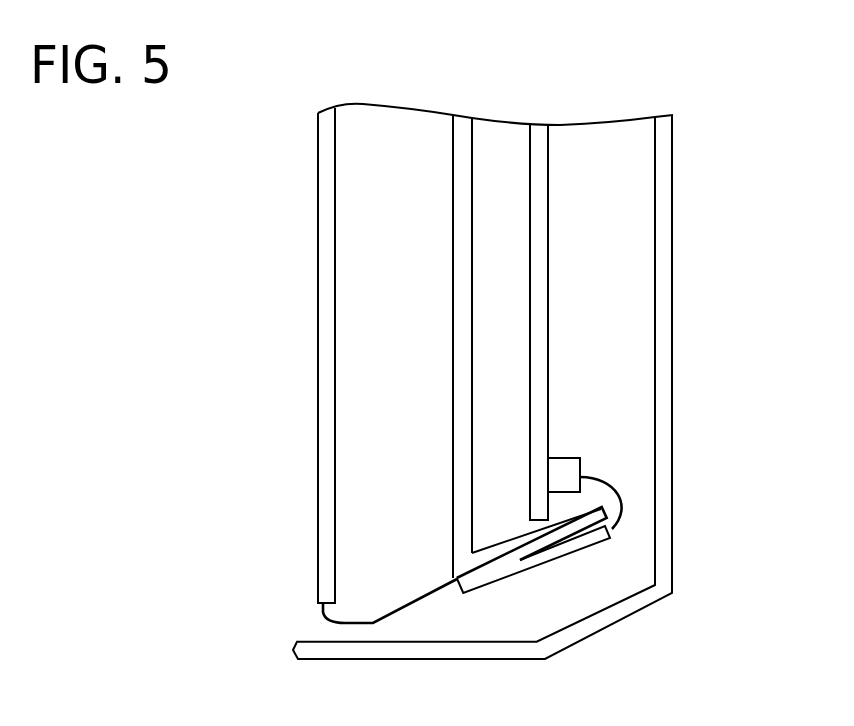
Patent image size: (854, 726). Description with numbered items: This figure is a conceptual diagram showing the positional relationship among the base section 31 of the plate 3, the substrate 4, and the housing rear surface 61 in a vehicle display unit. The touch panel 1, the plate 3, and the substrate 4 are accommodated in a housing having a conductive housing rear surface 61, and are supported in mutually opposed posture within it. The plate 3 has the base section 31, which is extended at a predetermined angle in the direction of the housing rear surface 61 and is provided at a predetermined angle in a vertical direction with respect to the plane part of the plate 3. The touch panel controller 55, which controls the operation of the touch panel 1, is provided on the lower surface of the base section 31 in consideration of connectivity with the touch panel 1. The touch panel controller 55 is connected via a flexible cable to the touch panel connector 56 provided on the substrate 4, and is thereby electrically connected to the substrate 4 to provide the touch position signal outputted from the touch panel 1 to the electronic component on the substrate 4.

The touch panel 1 is at (320, 248).
The plate 3 is at (504, 346).
The base section 31 is at (502, 553).
The substrate 4 is at (541, 155).
The touch panel controller 55 is at (560, 553).
The touch panel connector 56 is at (569, 457).
The housing rear surface 61 is at (665, 262).